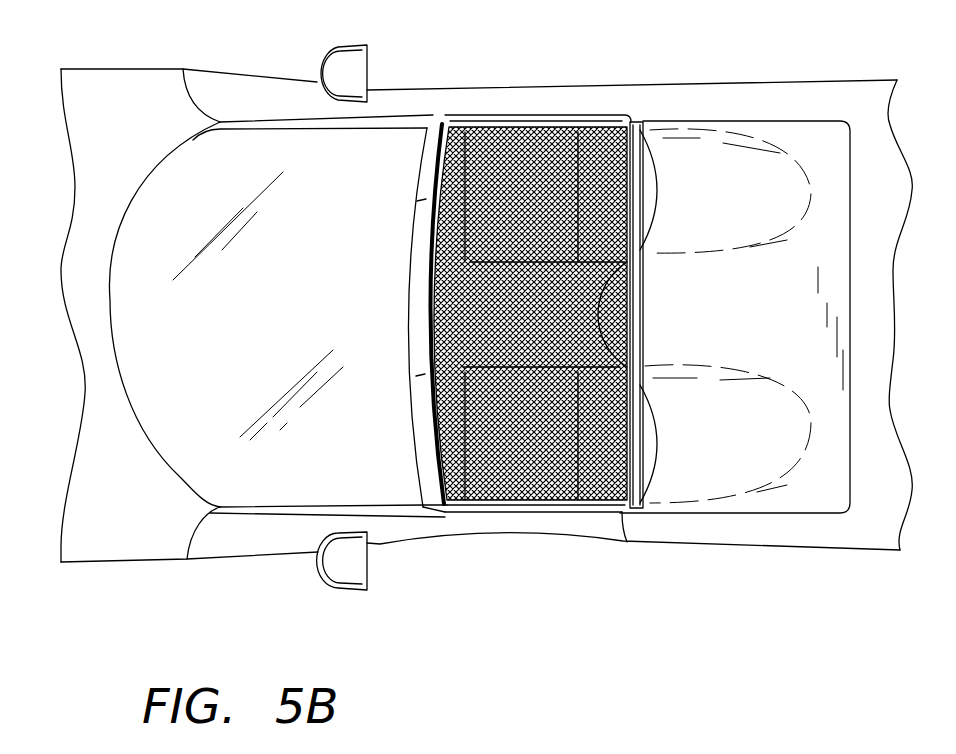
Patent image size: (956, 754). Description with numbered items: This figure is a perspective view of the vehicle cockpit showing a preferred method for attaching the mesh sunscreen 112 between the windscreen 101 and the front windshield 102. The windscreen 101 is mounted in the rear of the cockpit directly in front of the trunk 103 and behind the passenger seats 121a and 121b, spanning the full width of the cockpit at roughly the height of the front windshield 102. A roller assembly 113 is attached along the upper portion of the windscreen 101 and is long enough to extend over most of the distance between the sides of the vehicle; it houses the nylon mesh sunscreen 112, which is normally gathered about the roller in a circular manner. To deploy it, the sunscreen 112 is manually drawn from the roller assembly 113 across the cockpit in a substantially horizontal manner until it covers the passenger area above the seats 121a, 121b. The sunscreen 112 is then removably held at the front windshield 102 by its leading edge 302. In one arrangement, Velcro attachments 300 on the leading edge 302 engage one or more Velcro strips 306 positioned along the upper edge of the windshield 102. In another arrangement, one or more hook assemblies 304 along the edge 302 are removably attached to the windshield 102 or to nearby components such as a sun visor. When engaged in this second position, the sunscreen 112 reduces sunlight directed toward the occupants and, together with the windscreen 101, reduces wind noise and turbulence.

The windscreen 101 is at (660, 301).
The front windshield 102 is at (442, 104).
The trunk 103 is at (762, 102).
The mesh sunscreen 112 is at (541, 127).
The roller assembly 113 is at (634, 98).
The passenger seat 121a is at (677, 435).
The passenger seat 121b is at (677, 179).
The Velcro attachments 300 is at (415, 166).
The leading edge 302 is at (402, 280).
The hook assemblies 304 is at (415, 148).
The Velcro strips 306 is at (458, 100).